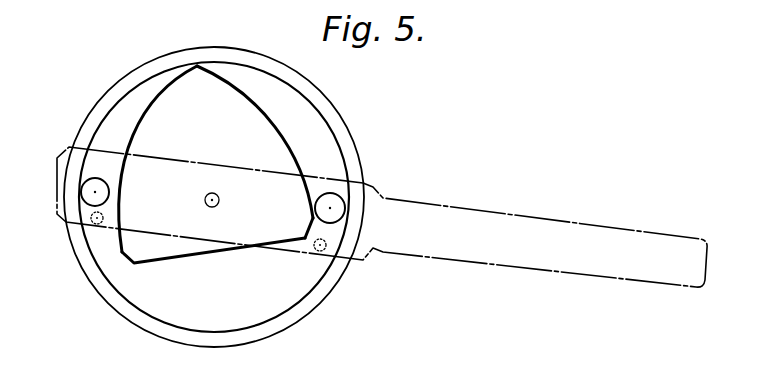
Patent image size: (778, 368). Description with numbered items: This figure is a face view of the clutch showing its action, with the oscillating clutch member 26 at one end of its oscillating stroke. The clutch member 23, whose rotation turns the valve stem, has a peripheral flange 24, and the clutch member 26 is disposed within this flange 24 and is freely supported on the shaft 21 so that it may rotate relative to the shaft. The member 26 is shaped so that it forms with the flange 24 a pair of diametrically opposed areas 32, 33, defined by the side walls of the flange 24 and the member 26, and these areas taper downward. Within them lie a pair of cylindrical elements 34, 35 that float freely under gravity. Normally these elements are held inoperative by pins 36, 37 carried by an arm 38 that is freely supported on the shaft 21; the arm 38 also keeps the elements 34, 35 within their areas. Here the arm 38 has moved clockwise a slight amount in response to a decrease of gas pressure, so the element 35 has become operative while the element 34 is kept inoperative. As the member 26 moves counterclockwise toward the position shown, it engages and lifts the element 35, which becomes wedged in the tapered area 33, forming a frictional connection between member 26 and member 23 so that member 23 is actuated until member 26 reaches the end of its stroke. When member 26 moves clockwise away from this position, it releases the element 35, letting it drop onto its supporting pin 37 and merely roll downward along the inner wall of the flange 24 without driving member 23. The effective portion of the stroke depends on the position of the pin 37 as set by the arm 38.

The shaft 21 is at (219, 203).
The clutch member 23 is at (176, 296).
The peripheral flange 24 is at (345, 138).
The clutch member 26 is at (250, 133).
The area 32 is at (102, 243).
The area 33 is at (338, 232).
The cylindrical element 34 is at (95, 192).
The cylindrical element 35 is at (333, 196).
The pin 36 is at (91, 219).
The pin 37 is at (325, 250).
The arm 38 is at (448, 207).